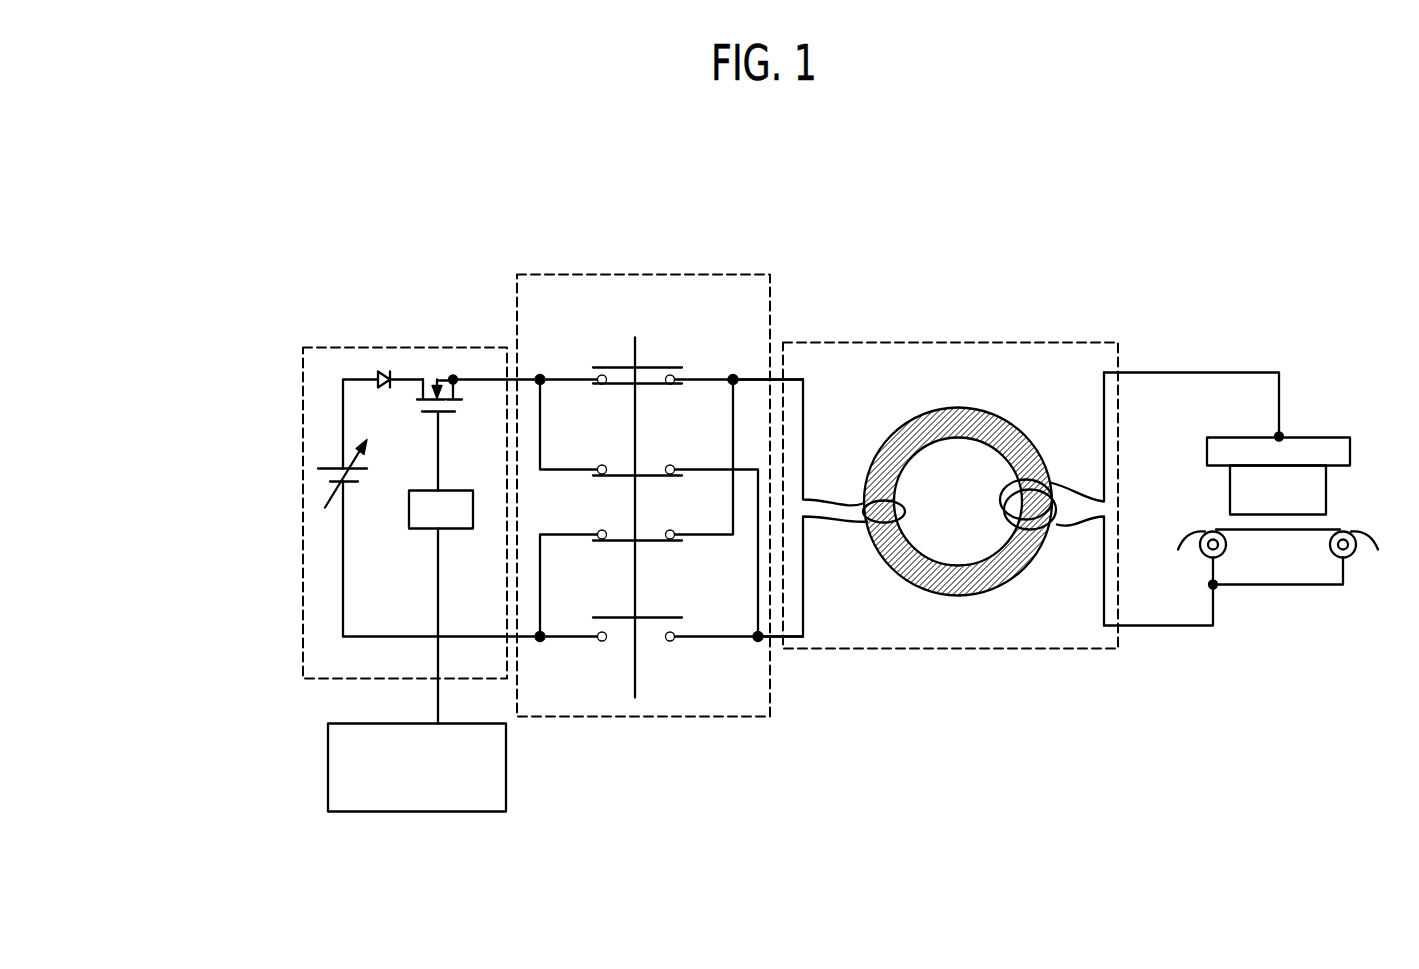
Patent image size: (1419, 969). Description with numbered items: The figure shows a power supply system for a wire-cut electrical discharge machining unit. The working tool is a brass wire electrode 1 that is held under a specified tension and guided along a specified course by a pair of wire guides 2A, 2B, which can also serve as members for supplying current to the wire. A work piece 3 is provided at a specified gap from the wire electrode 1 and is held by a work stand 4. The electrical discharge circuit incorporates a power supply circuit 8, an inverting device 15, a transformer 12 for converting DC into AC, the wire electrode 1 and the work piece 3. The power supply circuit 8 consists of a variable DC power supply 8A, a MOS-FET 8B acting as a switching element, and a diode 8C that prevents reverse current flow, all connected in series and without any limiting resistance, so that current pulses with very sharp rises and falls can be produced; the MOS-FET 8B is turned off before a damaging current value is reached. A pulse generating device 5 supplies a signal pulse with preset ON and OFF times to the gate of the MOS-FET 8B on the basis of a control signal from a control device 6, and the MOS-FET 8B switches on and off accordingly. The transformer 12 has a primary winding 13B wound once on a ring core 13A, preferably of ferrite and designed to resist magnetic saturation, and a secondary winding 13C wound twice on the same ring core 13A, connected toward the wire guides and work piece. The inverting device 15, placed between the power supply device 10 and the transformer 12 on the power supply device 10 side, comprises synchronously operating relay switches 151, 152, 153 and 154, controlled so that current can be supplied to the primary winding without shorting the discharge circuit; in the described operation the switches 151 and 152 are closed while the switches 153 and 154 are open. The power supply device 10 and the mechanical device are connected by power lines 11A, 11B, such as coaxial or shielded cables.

The wire electrode 1 is at (1290, 530).
The wire guide 2A is at (1201, 555).
The wire guide 2B is at (1355, 557).
The work piece 3 is at (1318, 500).
The work stand 4 is at (1330, 448).
The pulse generating device 5 is at (455, 530).
The control device 6 is at (507, 778).
The power supply circuit 8 is at (343, 408).
The variable DC power supply 8A is at (325, 480).
The field effect transistor (MOS-FET) 8B is at (467, 390).
The diode 8C is at (387, 367).
The power supply device 10 is at (356, 347).
The power line 11A is at (778, 380).
The power line 11B is at (778, 640).
The transformer 12 is at (930, 343).
The ring core 13A is at (898, 578).
The primary winding 13B is at (856, 503).
The secondary winding 13C is at (1147, 493).
The inverting device 15 is at (607, 272).
The switch 151 is at (645, 368).
The switch 152 is at (643, 618).
The switch 153 is at (617, 477).
The switch 154 is at (653, 541).